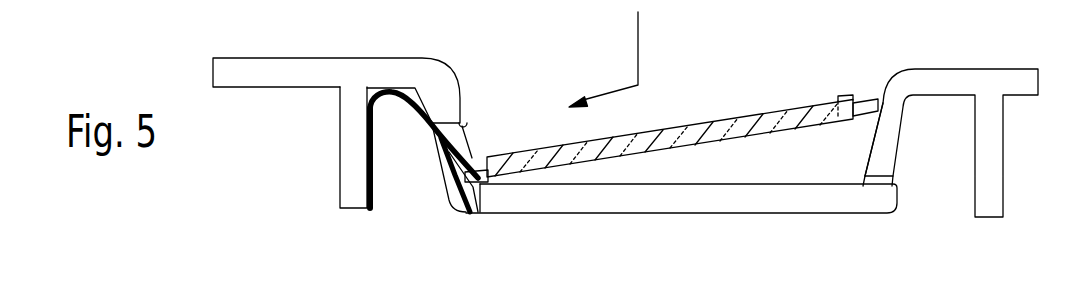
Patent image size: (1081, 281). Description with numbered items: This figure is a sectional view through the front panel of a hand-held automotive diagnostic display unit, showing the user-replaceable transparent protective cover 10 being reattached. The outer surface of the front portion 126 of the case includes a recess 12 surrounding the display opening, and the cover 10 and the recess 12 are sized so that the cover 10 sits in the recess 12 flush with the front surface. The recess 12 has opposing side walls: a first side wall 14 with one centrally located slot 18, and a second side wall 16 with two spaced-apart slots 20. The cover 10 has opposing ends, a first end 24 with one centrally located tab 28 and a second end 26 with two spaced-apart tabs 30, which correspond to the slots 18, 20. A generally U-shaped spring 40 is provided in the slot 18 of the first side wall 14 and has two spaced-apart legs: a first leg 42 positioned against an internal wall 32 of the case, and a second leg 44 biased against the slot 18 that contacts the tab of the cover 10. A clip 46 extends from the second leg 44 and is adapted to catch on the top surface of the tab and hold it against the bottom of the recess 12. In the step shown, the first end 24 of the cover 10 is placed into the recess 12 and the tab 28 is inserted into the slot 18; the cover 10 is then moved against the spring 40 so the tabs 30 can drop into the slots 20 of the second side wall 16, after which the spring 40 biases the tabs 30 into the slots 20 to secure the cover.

The protective cover 10 is at (692, 112).
The recess 12 is at (688, 184).
The first side wall 14 is at (453, 79).
The second side wall 16 is at (872, 150).
The slot 18 is at (467, 145).
The slots 20 is at (896, 181).
The first end 24 is at (494, 158).
The second end 26 is at (844, 96).
The tab 28 is at (488, 204).
The tabs 30 is at (873, 98).
The internal wall 32 is at (339, 175).
The spring 40 is at (413, 86).
The first leg 42 is at (372, 199).
The second leg 44 is at (465, 210).
The clip 46 is at (462, 158).
The front portion 126 is at (988, 61).